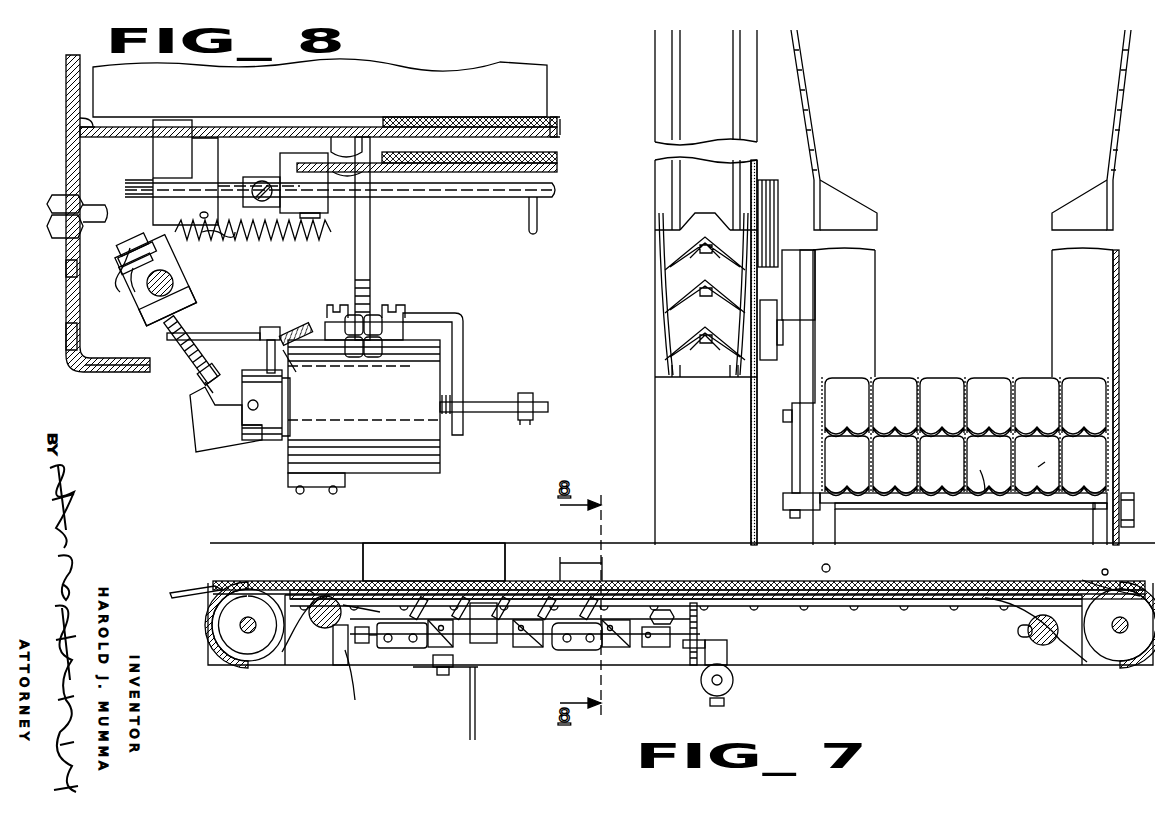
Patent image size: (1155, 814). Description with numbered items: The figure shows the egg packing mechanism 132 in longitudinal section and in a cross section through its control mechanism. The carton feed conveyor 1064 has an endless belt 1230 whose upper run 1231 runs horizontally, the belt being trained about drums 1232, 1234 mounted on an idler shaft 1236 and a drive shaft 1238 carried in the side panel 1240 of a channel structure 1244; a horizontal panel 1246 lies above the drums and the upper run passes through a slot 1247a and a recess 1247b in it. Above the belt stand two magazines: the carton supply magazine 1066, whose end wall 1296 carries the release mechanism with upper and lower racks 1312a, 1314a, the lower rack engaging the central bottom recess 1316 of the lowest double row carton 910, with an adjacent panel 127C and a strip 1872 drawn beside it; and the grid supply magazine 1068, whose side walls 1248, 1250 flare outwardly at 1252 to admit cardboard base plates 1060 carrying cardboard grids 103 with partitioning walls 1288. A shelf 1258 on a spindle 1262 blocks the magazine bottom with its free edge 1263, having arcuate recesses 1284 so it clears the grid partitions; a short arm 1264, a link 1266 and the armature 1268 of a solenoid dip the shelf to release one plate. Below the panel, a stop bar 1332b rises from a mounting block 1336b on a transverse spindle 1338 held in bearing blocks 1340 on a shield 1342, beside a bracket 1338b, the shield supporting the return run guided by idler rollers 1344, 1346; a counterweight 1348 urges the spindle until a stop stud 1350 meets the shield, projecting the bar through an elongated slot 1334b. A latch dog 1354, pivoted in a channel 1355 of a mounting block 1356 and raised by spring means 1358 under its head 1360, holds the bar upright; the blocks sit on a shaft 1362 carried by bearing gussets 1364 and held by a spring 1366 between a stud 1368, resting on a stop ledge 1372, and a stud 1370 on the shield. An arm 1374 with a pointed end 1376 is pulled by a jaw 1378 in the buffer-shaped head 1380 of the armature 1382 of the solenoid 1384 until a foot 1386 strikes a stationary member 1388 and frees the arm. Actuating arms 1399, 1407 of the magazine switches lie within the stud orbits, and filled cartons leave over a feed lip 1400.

In FIG. 7, the cardboard grid 103 is at (935, 455).
In FIG. 8, the egg packing mechanism 132 is at (492, 60).
In FIG. 7, the egg packing mechanism 132 is at (285, 673).
In FIG. 8, the double row carton 910 is at (320, 88).
In FIG. 7, the double row carton 910 is at (722, 330).
In FIG. 7, the cardboard base plate 1060 is at (985, 470).
In FIG. 8, the carton feed conveyor 1064 is at (557, 160).
In FIG. 7, the carton feed conveyor 1064 is at (315, 580).
In FIG. 7, the carton supply magazine 1066 is at (648, 207).
In FIG. 7, the grid supply magazine 1068 is at (1085, 272).
In FIG. 7, the panel 127C is at (800, 275).
In FIG. 7, the strip 1872 is at (829, 326).
In FIG. 8, the endless belt 1230 is at (550, 117).
In FIG. 7, the endless belt 1230 is at (207, 600).
In FIG. 8, the upper run of belt 1231 is at (487, 108).
In FIG. 7, the upper run of belt 1231 is at (320, 580).
In FIG. 7, the idler drum 1232 is at (1150, 650).
In FIG. 7, the drive drum 1234 is at (238, 640).
In FIG. 7, the idler shaft 1236 is at (1116, 630).
In FIG. 7, the drive shaft 1238 is at (240, 626).
In FIG. 8, the side panel 1240 is at (80, 305).
In FIG. 7, the side panel 1240 is at (965, 606).
In FIG. 8, the channel structure 1244 is at (76, 372).
In FIG. 7, the channel structure 1244 is at (975, 668).
In FIG. 8, the horizontal panel 1246 is at (298, 130).
In FIG. 7, the horizontal panel 1246 is at (700, 567).
In FIG. 7, the slot 1247a is at (215, 580).
In FIG. 7, the recess 1247b is at (1150, 590).
In FIG. 7, the magazine side wall 1248 is at (782, 360).
In FIG. 7, the magazine side wall 1250 is at (1113, 348).
In FIG. 7, the flared upper ends 1252 is at (1111, 117).
In FIG. 7, the shelf 1258 is at (985, 515).
In FIG. 7, the spindle 1262 is at (838, 502).
In FIG. 7, the free edge of shelf 1263 is at (900, 505).
In FIG. 7, the short arm 1264 is at (792, 510).
In FIG. 7, the link 1266 is at (797, 458).
In FIG. 7, the armature 1268 is at (780, 325).
In FIG. 7, the arcuate recess 1284 is at (1000, 505).
In FIG. 7, the partitioning wall 1288 is at (1100, 464).
In FIG. 7, the end wall 1296 is at (706, 199).
In FIG. 7, the upper rack 1312a is at (695, 297).
In FIG. 7, the lower rack 1314a is at (700, 343).
In FIG. 7, the central bottom recess 1316 is at (660, 328).
In FIG. 8, the stop bar 1332b is at (170, 125).
In FIG. 8, the elongated slot 1334b is at (198, 128).
In FIG. 8, the mounting block 1336b is at (171, 181).
In FIG. 8, the transverse spindle 1338 is at (458, 196).
In FIG. 7, the transverse spindle 1338 is at (548, 602).
In FIG. 7, the guide rod bracket 1338b is at (560, 565).
In FIG. 8, the bearing block 1340 is at (304, 185).
In FIG. 7, the bearing block 1340 is at (483, 623).
In FIG. 8, the shield 1342 is at (553, 160).
In FIG. 7, the shield 1342 is at (905, 600).
In FIG. 7, the idler roller 1344 is at (1035, 620).
In FIG. 7, the idler roller 1346 is at (320, 630).
In FIG. 8, the counterweight 1348 is at (258, 182).
In FIG. 8, the stop stud 1350 is at (530, 228).
In FIG. 7, the stop stud 1350 is at (530, 645).
In FIG. 8, the latch dog 1354 is at (128, 252).
In FIG. 8, the channel 1355 is at (126, 264).
In FIG. 8, the mounting block 1356 is at (145, 300).
In FIG. 7, the mounting block 1356 is at (620, 640).
In FIG. 8, the spring means 1358 is at (133, 280).
In FIG. 8, the head of latch dog 1360 is at (226, 238).
In FIG. 8, the shaft 1362 is at (147, 286).
In FIG. 7, the shaft 1362 is at (368, 648).
In FIG. 7, the bearing gusset 1364 is at (343, 648).
In FIG. 8, the spring 1366 is at (300, 243).
In FIG. 8, the stud 1368 is at (125, 240).
In FIG. 8, the stud 1370 is at (358, 256).
In FIG. 7, the stud 1370 is at (697, 610).
In FIG. 8, the stop ledge 1372 is at (205, 382).
In FIG. 7, the stop ledge 1372 is at (812, 665).
In FIG. 8, the arm 1374 is at (208, 332).
In FIG. 8, the pointed end 1376 is at (208, 392).
In FIG. 8, the jaw 1378 is at (218, 440).
In FIG. 8, the buffer-shaped head 1380 is at (272, 445).
In FIG. 8, the armature 1382 is at (288, 386).
In FIG. 8, the solenoid 1384 is at (375, 450).
In FIG. 8, the foot 1386 is at (270, 326).
In FIG. 8, the stationary member 1388 is at (296, 372).
In FIG. 7, the actuating arm 1399 is at (577, 643).
In FIG. 7, the feed lip 1400 is at (190, 588).
In FIG. 7, the actuating arm 1407 is at (370, 683).